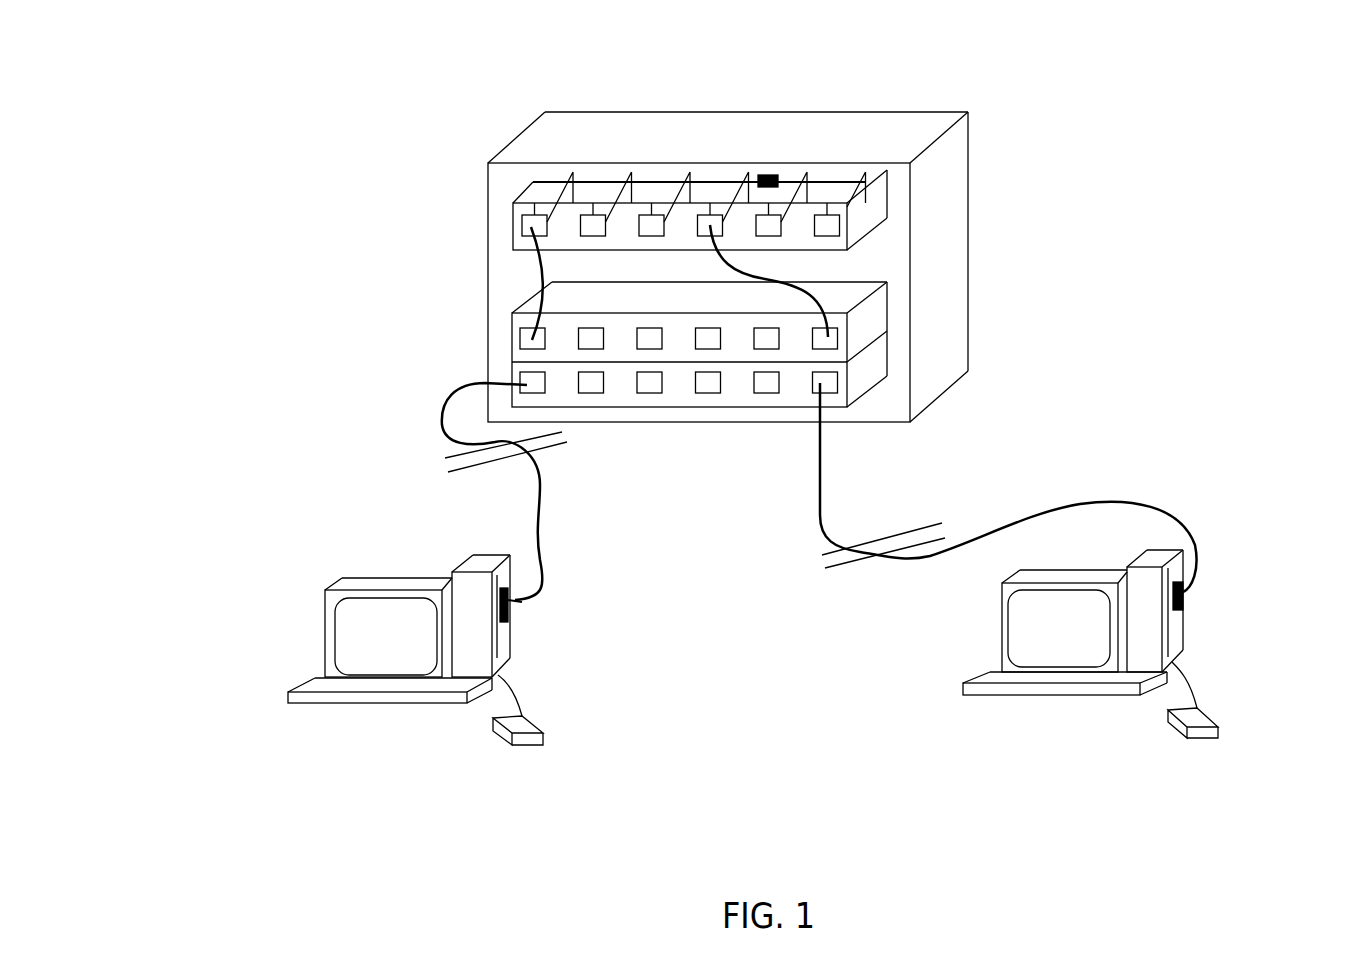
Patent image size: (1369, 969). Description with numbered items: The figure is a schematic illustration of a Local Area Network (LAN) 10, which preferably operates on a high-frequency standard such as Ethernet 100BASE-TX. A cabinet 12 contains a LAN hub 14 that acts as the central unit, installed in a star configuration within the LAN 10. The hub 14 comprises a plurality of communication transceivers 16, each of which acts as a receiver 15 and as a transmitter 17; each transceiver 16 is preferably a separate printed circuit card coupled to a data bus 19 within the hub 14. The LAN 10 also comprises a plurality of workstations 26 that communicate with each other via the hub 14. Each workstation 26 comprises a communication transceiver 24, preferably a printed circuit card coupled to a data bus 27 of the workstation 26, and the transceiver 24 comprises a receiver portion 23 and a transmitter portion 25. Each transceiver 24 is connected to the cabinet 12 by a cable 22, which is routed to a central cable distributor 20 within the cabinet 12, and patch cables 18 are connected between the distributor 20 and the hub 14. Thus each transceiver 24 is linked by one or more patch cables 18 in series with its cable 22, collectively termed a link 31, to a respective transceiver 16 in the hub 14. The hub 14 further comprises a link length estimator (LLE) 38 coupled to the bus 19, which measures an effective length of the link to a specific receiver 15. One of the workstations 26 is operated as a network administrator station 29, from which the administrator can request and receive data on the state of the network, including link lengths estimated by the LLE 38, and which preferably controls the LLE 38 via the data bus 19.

The Local Area Network (LAN) 10 is at (1195, 317).
The cabinet 12 is at (503, 147).
The LAN hub 14 is at (880, 226).
The receiver 15 is at (543, 195).
The communication transceiver 16 is at (551, 200).
The transmitter 17 is at (546, 198).
The patch cable 18 is at (538, 265).
The data bus 19 is at (833, 180).
The central cable distributor 20 is at (618, 407).
The cable 22 is at (538, 480).
The receiver portion 23 is at (517, 600).
The communication transceiver 24 is at (518, 603).
The transmitter portion 25 is at (508, 618).
The workstation 26 is at (325, 637).
The data bus 27 is at (510, 658).
The network administrator station 29 is at (1002, 587).
The link 31 is at (423, 327).
The link length estimator (LLE) 38 is at (777, 175).